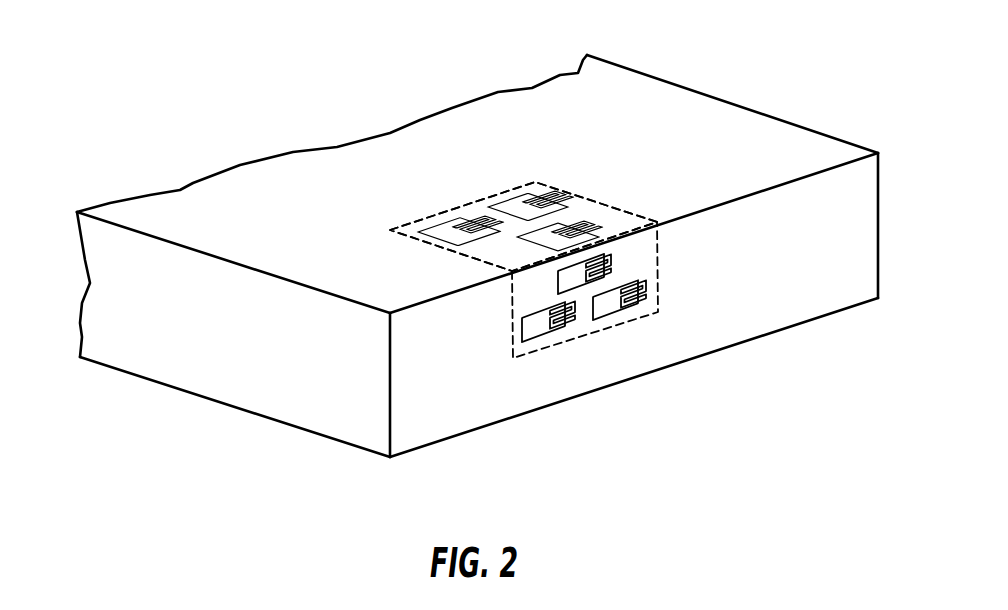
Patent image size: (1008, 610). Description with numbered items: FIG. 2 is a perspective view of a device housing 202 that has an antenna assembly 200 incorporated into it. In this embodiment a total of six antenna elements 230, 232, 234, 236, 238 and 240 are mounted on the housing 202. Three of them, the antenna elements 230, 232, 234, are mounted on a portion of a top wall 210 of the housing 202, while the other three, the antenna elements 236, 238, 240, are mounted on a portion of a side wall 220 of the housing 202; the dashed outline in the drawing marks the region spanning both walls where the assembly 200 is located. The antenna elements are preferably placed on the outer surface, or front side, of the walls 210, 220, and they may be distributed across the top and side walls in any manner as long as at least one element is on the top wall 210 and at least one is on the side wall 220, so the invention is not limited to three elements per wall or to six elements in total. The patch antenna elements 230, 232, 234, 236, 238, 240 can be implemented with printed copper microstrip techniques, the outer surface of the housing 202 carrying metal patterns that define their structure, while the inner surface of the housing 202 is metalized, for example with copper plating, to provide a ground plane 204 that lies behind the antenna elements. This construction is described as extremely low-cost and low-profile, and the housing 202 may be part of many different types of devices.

The antenna assembly 200 is at (485, 180).
The housing 202 is at (700, 93).
The ground plane 204 is at (417, 222).
The top wall 210 is at (760, 130).
The side wall 220 is at (737, 332).
The antenna element 230 is at (447, 236).
The antenna element 232 is at (509, 200).
The antenna element 234 is at (560, 237).
The antenna element 236 is at (558, 282).
The antenna element 238 is at (552, 338).
The antenna element 240 is at (617, 318).